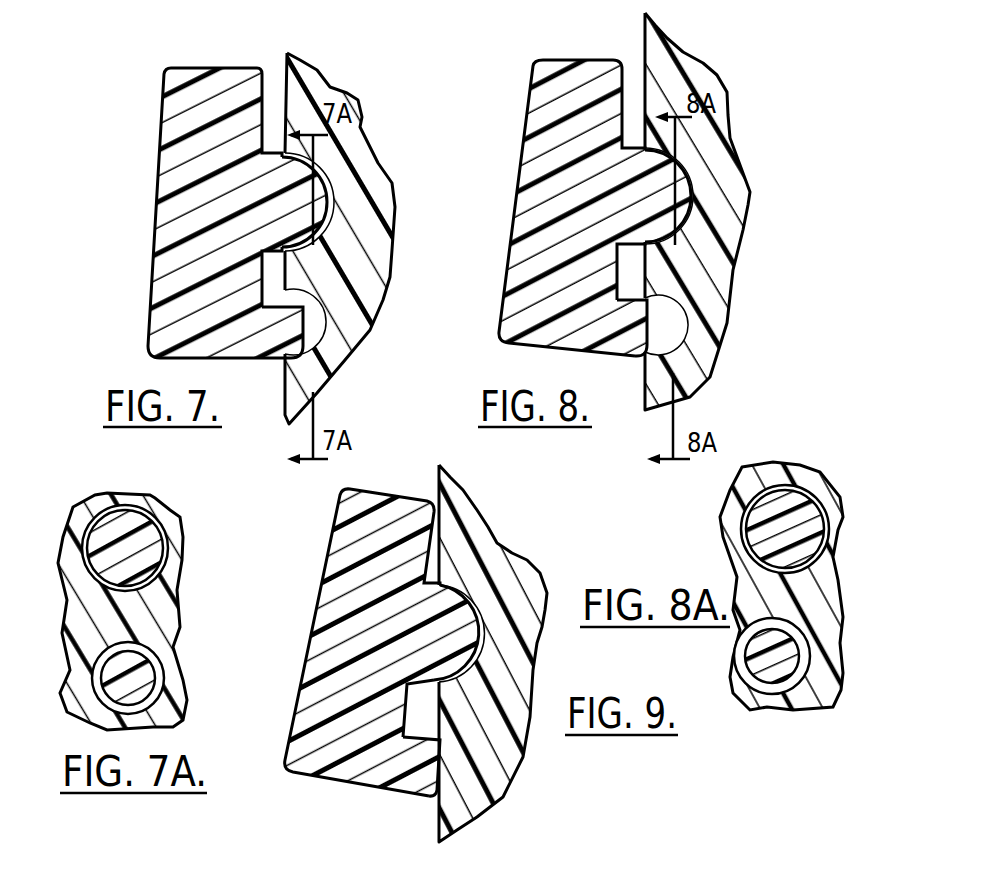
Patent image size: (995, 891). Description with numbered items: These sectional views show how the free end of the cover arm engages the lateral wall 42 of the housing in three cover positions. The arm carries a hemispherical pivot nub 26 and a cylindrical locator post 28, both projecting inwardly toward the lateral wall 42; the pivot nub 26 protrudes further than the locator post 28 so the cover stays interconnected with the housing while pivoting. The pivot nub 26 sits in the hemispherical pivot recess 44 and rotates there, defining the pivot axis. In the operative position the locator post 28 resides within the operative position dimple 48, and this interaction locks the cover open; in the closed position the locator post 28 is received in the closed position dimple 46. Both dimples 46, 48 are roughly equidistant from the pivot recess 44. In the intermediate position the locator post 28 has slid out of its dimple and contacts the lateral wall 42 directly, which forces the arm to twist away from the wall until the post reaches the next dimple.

In FIG. 7, the pivot nub 26 is at (305, 185).
In FIG. 8, the pivot nub 26 is at (668, 190).
In FIG. 7A, the pivot nub 26 is at (152, 552).
In FIG. 9, the pivot nub 26 is at (466, 607).
In FIG. 8A, the pivot nub 26 is at (765, 506).
In FIG. 7, the locator post 28 is at (292, 330).
In FIG. 8, the locator post 28 is at (648, 322).
In FIG. 7A, the locator post 28 is at (145, 688).
In FIG. 9, the locator post 28 is at (423, 773).
In FIG. 8A, the locator post 28 is at (768, 658).
In FIG. 7, the lateral wall 42 is at (290, 70).
In FIG. 8, the lateral wall 42 is at (641, 52).
In FIG. 9, the lateral wall 42 is at (490, 700).
In FIG. 7, the pivot recess 44 is at (327, 202).
In FIG. 8, the pivot recess 44 is at (680, 208).
In FIG. 7A, the pivot recess 44 is at (160, 512).
In FIG. 8A, the pivot recess 44 is at (797, 485).
In FIG. 8, the closed position dimple 46 is at (677, 338).
In FIG. 7A, the closed position dimple 46 is at (152, 660).
In FIG. 8A, the closed position dimple 46 is at (798, 683).
In FIG. 7, the operative position dimple 48 is at (313, 338).